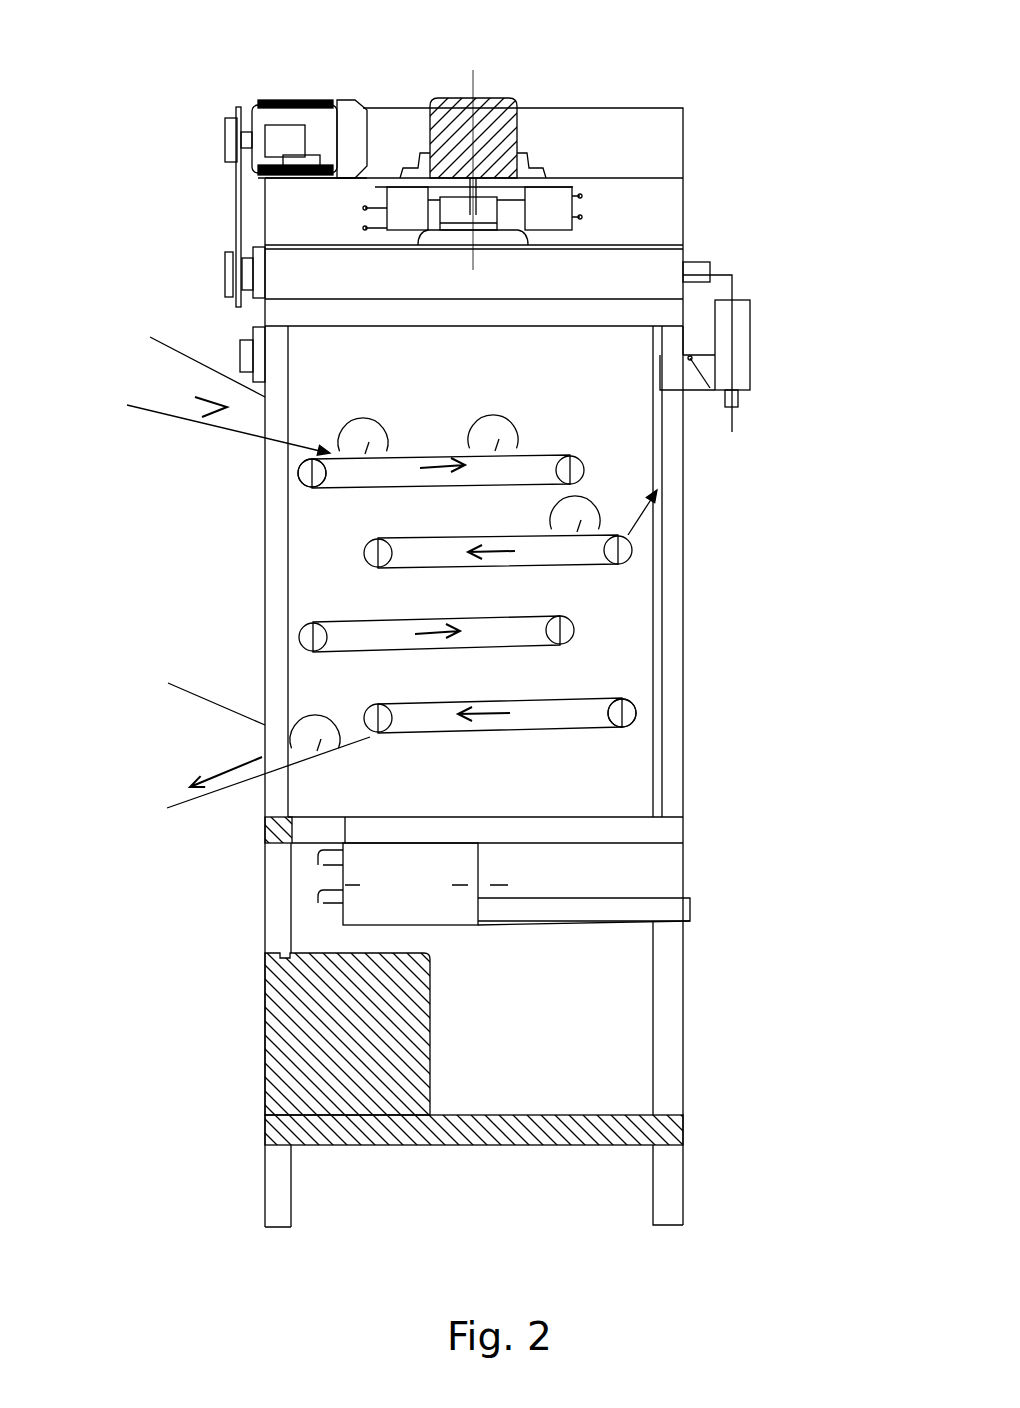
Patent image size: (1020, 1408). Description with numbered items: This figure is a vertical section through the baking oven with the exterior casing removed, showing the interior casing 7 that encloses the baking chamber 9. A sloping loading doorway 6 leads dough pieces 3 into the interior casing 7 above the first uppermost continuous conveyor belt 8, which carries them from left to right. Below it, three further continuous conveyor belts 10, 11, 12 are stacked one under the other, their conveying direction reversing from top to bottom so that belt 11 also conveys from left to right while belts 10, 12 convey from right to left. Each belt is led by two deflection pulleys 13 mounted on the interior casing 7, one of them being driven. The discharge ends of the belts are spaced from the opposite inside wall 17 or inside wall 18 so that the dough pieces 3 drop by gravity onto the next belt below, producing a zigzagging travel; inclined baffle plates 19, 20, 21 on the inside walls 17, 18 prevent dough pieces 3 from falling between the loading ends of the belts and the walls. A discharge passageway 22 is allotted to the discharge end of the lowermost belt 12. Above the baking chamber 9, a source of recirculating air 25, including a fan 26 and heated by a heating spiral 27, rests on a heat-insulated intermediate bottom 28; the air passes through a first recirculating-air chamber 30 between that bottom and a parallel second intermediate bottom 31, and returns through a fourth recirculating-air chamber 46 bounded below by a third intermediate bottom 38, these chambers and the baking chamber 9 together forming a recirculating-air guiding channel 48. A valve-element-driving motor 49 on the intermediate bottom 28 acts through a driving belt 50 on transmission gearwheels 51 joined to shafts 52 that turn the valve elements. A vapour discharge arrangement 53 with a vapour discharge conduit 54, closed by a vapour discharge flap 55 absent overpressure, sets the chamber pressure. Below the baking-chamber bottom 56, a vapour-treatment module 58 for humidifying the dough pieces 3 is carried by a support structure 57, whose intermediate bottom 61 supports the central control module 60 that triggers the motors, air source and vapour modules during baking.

The dough pieces 3 is at (505, 438).
The loading doorway 6 is at (157, 412).
The interior casing 7 is at (273, 517).
The first uppermost continuous conveyor belt 8 is at (553, 444).
The baking chamber 9 is at (507, 783).
The continuous conveyor belt 10 is at (400, 540).
The continuous conveyor belt 11 is at (530, 648).
The lowermost continuous conveyor belt 12 is at (570, 730).
The deflection pulleys 13 is at (315, 472).
The inside wall 17 is at (648, 590).
The inside wall 18 is at (288, 667).
The inclined baffle plate 19 is at (658, 512).
The inclined baffle plate 20 is at (303, 622).
The inclined baffle plate 21 is at (622, 698).
The discharge passageway 22 is at (178, 805).
The source of recirculating air 25 is at (494, 92).
The fan 26 is at (552, 198).
The heating spiral 27 is at (580, 196).
The heat-insulated intermediate bottom 28 is at (645, 178).
The first recirculating-air chamber 30 is at (282, 200).
The second intermediate bottom 31 is at (652, 245).
The third intermediate bottom 38 is at (633, 297).
The fourth recirculating-air chamber 46 is at (283, 287).
The recirculating-air guiding channel 48 is at (354, 210).
The valve-element-driving motor 49 is at (320, 122).
The driving belt 50 is at (237, 232).
The transmission gearwheels 51 is at (228, 268).
The shafts 52 is at (700, 270).
The vapour discharge arrangement 53 is at (758, 317).
The vapour discharge conduit 54 is at (740, 333).
The vapour discharge flap 55 is at (692, 383).
The baking-chamber bottom 56 is at (630, 817).
The support structure 57 is at (668, 1033).
The vapour-treatment module 58 is at (355, 885).
The central control module 60 is at (283, 1005).
The intermediate bottom 61 is at (625, 1115).